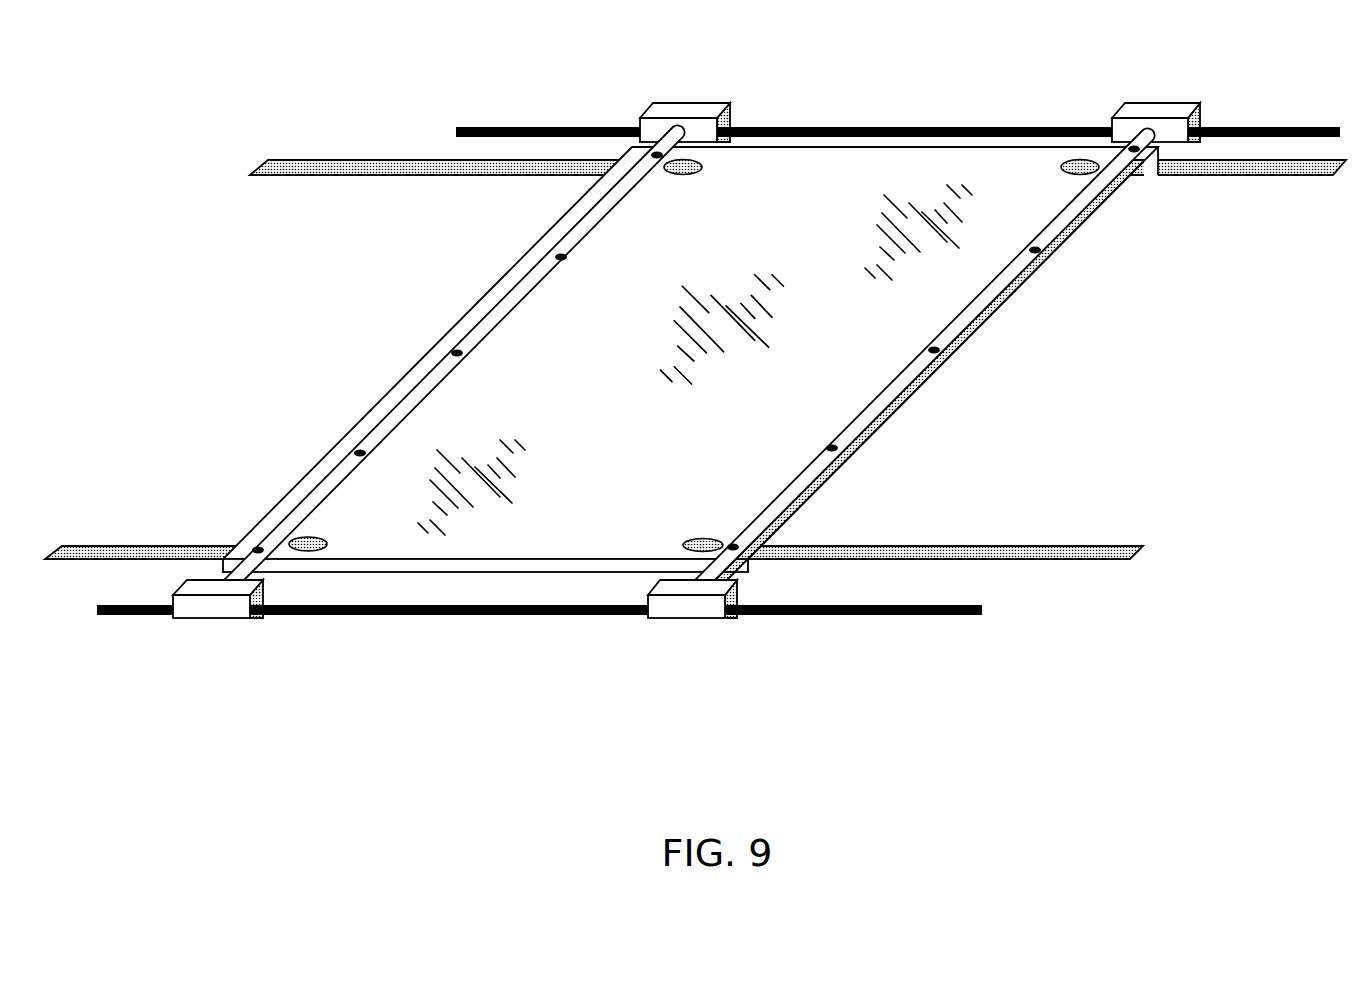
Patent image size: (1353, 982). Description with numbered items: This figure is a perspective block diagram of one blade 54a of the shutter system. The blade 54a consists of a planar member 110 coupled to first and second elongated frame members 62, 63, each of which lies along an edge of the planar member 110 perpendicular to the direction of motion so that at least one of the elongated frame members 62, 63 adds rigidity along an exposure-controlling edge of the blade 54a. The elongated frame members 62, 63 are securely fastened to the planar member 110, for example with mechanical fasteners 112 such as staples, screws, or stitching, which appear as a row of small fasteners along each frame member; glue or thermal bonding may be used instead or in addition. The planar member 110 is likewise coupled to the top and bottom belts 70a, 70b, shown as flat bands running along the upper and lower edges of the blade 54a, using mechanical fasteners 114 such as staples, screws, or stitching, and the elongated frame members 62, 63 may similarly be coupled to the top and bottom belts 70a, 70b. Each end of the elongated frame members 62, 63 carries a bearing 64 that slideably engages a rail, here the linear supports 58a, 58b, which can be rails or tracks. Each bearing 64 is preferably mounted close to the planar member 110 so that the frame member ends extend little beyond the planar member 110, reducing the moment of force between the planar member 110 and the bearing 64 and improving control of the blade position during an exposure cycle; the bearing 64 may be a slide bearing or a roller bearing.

The blade 54a is at (697, 355).
The linear support 58a is at (1276, 128).
The linear support 58b is at (920, 612).
The first elongated frame member 62 is at (388, 413).
The second elongated frame member 63 is at (1083, 202).
The bearing 64 is at (687, 103).
The top belt 70a is at (1237, 175).
The bottom belt 70b is at (1075, 545).
The planar member 110 is at (600, 413).
The mechanical fastener 112 is at (458, 350).
The mechanical fastener 114 is at (703, 172).